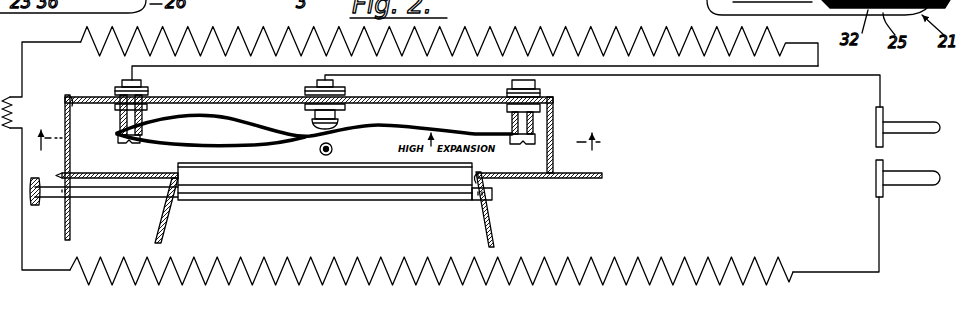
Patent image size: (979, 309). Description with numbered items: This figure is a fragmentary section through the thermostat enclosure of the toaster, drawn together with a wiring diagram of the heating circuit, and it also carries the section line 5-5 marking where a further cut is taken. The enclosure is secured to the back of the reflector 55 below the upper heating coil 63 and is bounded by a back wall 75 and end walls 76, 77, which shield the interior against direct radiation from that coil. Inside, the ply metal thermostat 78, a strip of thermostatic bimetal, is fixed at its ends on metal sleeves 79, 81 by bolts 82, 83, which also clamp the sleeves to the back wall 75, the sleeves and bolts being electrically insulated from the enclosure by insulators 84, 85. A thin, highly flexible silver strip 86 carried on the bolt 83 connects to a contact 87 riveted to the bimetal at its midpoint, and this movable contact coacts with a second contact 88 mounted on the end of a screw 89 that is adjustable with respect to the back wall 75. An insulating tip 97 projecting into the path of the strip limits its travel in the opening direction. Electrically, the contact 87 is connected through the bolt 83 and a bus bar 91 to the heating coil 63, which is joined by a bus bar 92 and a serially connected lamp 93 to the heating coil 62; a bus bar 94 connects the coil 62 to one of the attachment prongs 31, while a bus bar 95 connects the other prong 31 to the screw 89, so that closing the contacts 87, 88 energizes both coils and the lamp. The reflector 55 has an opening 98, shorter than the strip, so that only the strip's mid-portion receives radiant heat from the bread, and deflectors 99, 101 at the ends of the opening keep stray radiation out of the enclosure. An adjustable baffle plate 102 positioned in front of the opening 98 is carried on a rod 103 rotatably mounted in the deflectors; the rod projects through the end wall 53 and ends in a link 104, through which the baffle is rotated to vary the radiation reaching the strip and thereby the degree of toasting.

The section line 5- 5 is at (317, 145).
The attachment prongs 31 is at (918, 128).
The end wall 53 is at (63, 213).
The reflector 55 is at (592, 180).
The heating coil 62 is at (558, 257).
The heating coil 63 is at (610, 29).
The back wall 75 is at (388, 97).
The end wall 76 is at (553, 112).
The end wall 77 is at (70, 97).
The ply metal thermostat 78 is at (385, 149).
The metal sleeve 79 is at (513, 116).
The metal sleeve 81 is at (143, 112).
The bolt 82 is at (533, 127).
The bolt 83 is at (127, 120).
The insulator 84 is at (524, 112).
The insulator 85 is at (129, 107).
The strip 86 is at (228, 122).
The contact 87 is at (306, 143).
The second contact 88 is at (334, 127).
The screw 89 is at (320, 100).
The bus bar 91 is at (717, 67).
The bus bar 92 is at (22, 220).
The lamp 93 is at (13, 110).
The bus bar 94 is at (879, 233).
The bus bar 95 is at (820, 77).
The insulating tip 97 is at (332, 149).
The opening 98 is at (496, 177).
The deflector 99 is at (493, 217).
The deflector 101 is at (158, 222).
The baffle plate 102 is at (423, 180).
The rod 103 is at (85, 192).
The link 104 is at (42, 181).